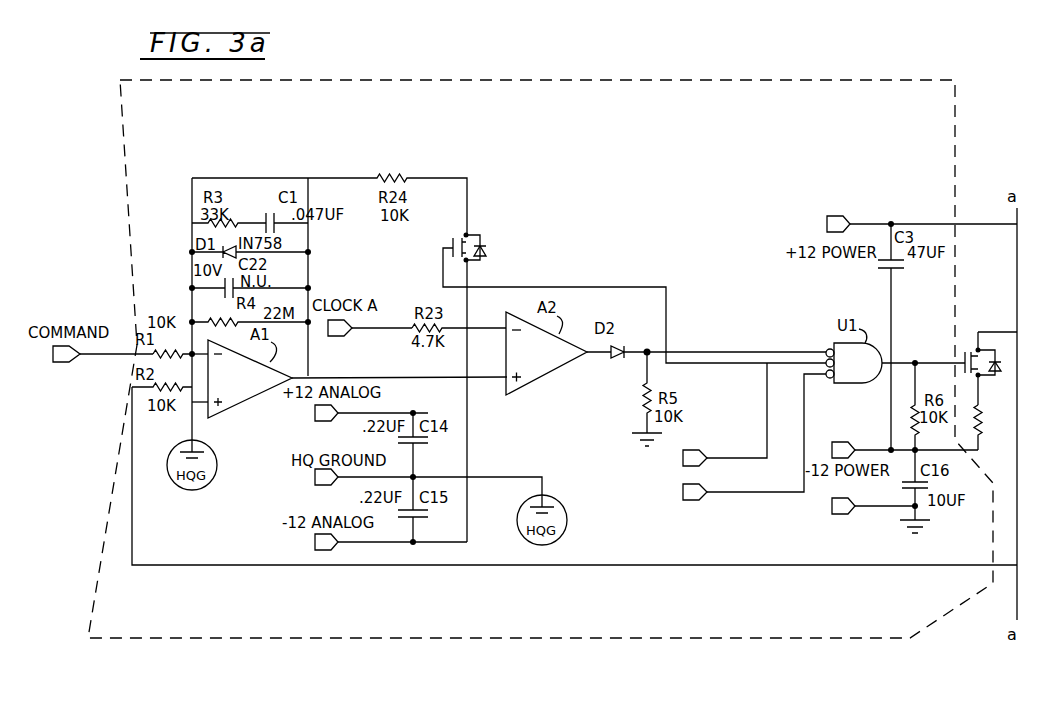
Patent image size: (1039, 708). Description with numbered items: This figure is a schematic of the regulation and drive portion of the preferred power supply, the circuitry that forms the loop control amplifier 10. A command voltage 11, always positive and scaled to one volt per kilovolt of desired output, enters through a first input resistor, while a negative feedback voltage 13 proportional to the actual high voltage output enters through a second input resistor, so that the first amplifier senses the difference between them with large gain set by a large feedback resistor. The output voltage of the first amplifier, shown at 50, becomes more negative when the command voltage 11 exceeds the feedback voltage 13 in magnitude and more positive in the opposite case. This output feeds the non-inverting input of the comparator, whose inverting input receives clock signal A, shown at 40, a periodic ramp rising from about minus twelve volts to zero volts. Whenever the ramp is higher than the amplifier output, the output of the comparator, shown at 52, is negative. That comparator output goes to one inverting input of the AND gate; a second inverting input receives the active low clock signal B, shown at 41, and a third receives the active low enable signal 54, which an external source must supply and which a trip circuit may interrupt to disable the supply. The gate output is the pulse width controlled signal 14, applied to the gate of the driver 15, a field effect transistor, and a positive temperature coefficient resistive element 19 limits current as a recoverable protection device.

The loop control amplifier 10 is at (466, 80).
The command voltage 11 is at (95, 364).
The feedback voltage 13 is at (813, 565).
The pulse width controlled signal 14 is at (917, 363).
The driver 15 is at (963, 352).
The resistive element 19 is at (981, 432).
The clock signal A 40 is at (389, 328).
The clock signal B 41 is at (750, 492).
The output voltage of amplifier A1 50 is at (387, 377).
The output of comparator A2 52 is at (601, 354).
The enable signal 54 is at (742, 458).